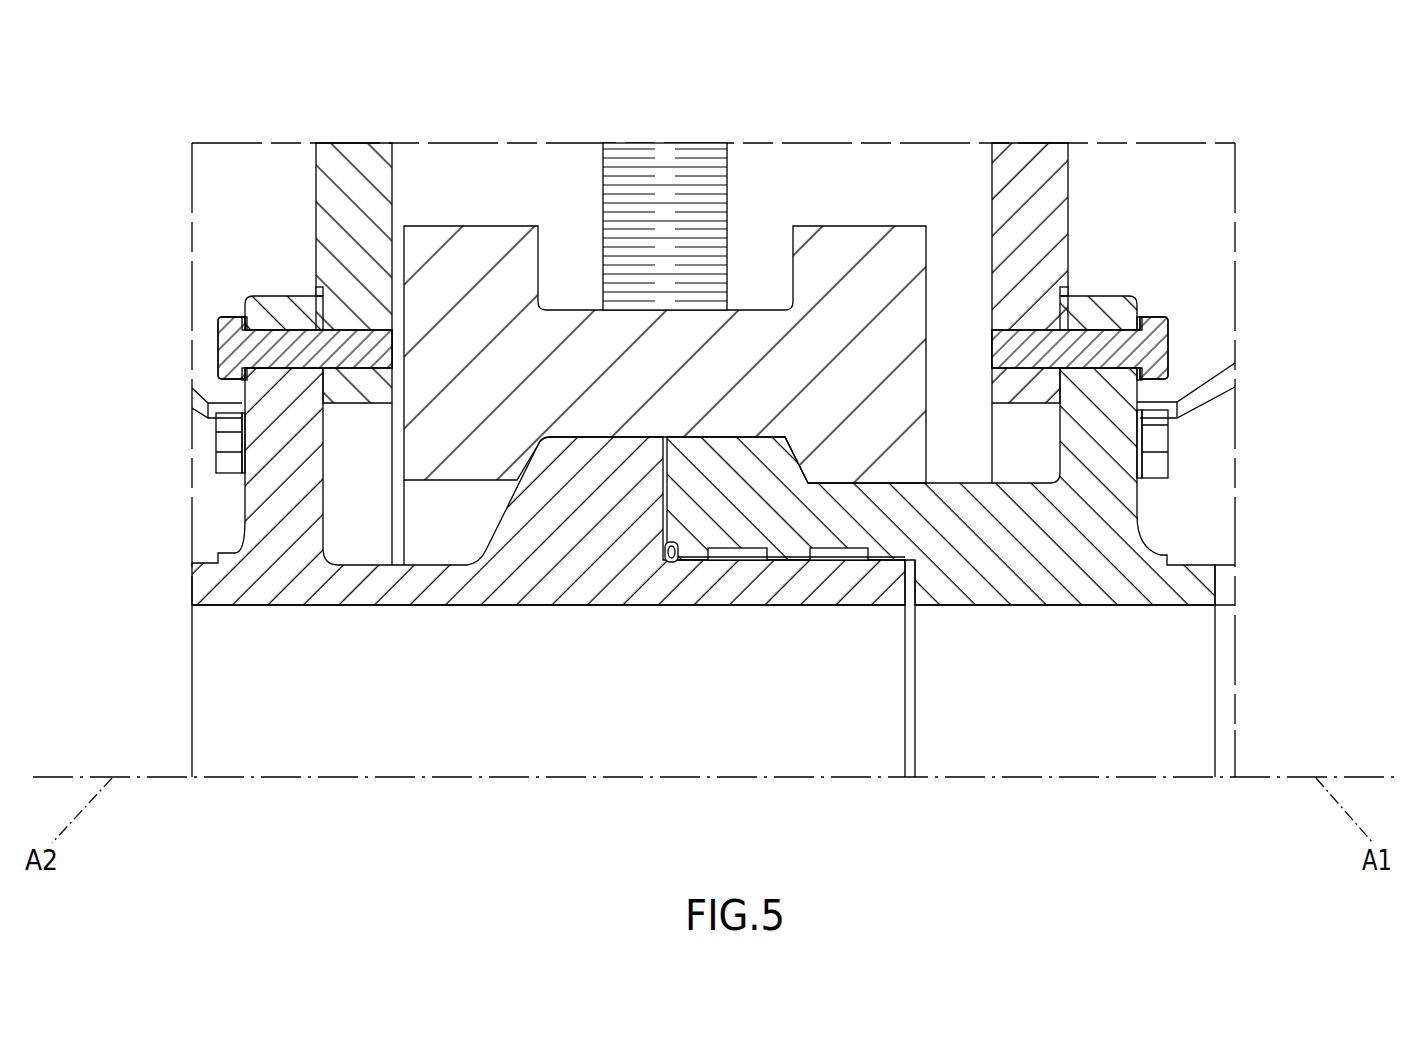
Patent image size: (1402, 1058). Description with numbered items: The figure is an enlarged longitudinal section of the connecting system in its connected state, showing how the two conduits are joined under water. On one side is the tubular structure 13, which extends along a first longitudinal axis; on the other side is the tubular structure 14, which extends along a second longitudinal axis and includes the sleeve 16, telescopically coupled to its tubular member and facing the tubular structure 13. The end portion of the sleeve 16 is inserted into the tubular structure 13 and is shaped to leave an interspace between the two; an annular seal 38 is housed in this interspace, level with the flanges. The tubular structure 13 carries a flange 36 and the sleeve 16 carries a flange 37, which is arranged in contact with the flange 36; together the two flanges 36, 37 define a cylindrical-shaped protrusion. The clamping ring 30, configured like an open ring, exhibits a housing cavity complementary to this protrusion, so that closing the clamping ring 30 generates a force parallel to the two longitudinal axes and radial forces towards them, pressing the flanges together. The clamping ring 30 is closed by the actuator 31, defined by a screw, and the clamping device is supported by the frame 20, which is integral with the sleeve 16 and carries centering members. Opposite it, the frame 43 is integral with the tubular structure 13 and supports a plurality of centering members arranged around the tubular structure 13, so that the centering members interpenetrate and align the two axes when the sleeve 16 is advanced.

The tubular structure 13 is at (1090, 716).
The tubular structure 14 is at (274, 814).
The sleeve 16 is at (542, 716).
The frame 20 is at (340, 200).
The clamping ring 30 is at (508, 248).
The actuator 31 is at (702, 158).
The flange 36 is at (787, 497).
The flange 37 is at (555, 480).
The annular seal 38 is at (672, 552).
The frame 43 is at (1052, 215).